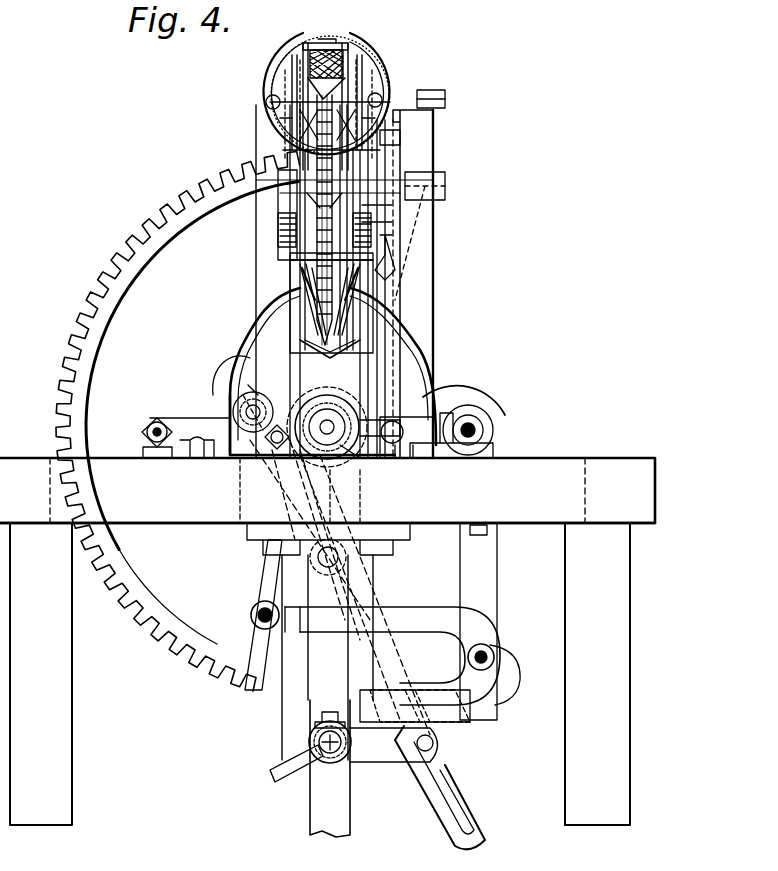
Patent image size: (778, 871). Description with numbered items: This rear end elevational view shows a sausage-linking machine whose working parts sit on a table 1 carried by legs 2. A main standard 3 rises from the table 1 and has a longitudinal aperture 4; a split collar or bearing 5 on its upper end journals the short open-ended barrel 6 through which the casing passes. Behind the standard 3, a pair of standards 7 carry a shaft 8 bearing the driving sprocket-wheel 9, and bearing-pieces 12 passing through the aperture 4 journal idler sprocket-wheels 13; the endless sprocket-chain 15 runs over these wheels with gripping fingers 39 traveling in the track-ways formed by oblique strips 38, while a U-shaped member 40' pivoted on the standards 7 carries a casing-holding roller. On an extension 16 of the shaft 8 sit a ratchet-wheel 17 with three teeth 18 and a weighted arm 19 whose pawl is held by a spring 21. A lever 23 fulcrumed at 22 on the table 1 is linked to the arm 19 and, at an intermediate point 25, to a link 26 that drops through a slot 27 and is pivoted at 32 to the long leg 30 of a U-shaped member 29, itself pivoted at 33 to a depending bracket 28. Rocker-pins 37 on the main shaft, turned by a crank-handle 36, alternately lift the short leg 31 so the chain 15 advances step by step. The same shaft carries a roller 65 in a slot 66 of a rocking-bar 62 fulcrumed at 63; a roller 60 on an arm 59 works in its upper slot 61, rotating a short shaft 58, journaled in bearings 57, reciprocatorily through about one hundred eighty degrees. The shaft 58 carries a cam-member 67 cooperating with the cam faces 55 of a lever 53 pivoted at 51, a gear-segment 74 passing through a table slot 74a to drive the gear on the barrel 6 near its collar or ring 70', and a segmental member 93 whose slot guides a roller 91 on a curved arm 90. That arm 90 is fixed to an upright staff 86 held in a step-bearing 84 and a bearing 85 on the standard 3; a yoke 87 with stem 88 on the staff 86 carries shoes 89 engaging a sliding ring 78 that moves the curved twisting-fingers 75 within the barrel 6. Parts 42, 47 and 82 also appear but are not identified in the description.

The table 1 is at (657, 490).
The legs 2 is at (320, 674).
The main standard 3 is at (327, 417).
The aperture 4 is at (325, 345).
The split collar or bearing 5 is at (270, 112).
The barrel 6 is at (362, 85).
The standards 7 is at (252, 342).
The shaft or axle-bar 8 is at (278, 195).
The conveyer driving sprocket-wheel 9 is at (326, 74).
The bearing-pieces 12 is at (290, 257).
The idler sprocket-wheels 13 is at (278, 232).
The endless conveyer-belt 15 is at (300, 330).
The shaft extension 16 is at (381, 195).
The ratchet-wheel 17 is at (392, 205).
The teeth 18 is at (392, 222).
The weighted arm 19 is at (401, 131).
The spring 21 is at (395, 250).
The fulcrum 22 is at (160, 418).
The lever 23 is at (352, 455).
The intermediate pivot 25 is at (255, 480).
The second link 26 is at (268, 580).
The slot 27 is at (330, 500).
The bracket 28 is at (478, 621).
The U-shaped member 29 is at (494, 657).
The long leg 30 is at (392, 654).
The short leg 31 is at (415, 705).
The pivot 32 is at (250, 615).
The pivot 33 is at (505, 690).
The crank-handle 36 is at (330, 768).
The rocker-pins 37 is at (372, 780).
The elongated strips 38 is at (352, 110).
The gripping fingers 39 is at (348, 350).
The U-shaped member 40' is at (310, 93).
The rod 42 is at (393, 280).
The post 47 is at (308, 60).
The pivot 51 is at (485, 420).
The lever 53 is at (462, 386).
The side faces 55 is at (325, 755).
The bearings 57 is at (330, 470).
The short shaft 58 is at (338, 404).
The lateral arm 59 is at (280, 400).
The roller 60 is at (238, 408).
The slot 61 is at (240, 388).
The rocking-bar 62 is at (222, 360).
The fulcrum 63 is at (328, 575).
The roller 65 is at (435, 744).
The elongated slot 66 is at (462, 810).
The cam-member 67 is at (417, 748).
The collar or ring 70' is at (348, 95).
The gear-segment 74 is at (75, 352).
The slot 74a is at (52, 488).
The twisting-fingers 75 is at (285, 130).
The second ring 78 is at (283, 150).
The screw 82 is at (266, 100).
The step-bearing 84 is at (418, 443).
The bearing 85 is at (445, 186).
The staff 86 is at (435, 135).
The yoke 87 is at (360, 62).
The stem 88 is at (445, 98).
The shoes 89 is at (310, 43).
The curved arm 90 is at (400, 440).
The roller 91 is at (364, 450).
The segmental member 93 is at (275, 449).